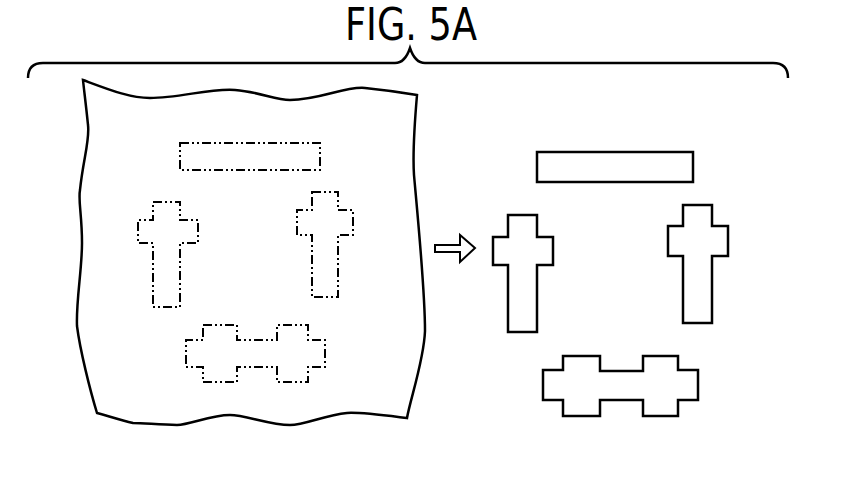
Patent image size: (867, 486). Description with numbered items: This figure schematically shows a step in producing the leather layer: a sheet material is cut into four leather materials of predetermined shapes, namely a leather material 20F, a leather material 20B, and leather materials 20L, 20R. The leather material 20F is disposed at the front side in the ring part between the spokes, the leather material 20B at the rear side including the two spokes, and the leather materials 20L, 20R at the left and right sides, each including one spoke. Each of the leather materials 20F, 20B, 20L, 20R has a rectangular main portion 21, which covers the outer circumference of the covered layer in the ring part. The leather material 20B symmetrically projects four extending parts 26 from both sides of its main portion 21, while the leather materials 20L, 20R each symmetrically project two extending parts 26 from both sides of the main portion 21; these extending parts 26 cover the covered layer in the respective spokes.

The leather material 20F is at (217, 155).
The leather material 20L is at (167, 273).
The leather material 20R is at (333, 280).
The leather material 20B is at (217, 352).
The main portion 21 is at (658, 160).
The extending part 26 is at (548, 247).